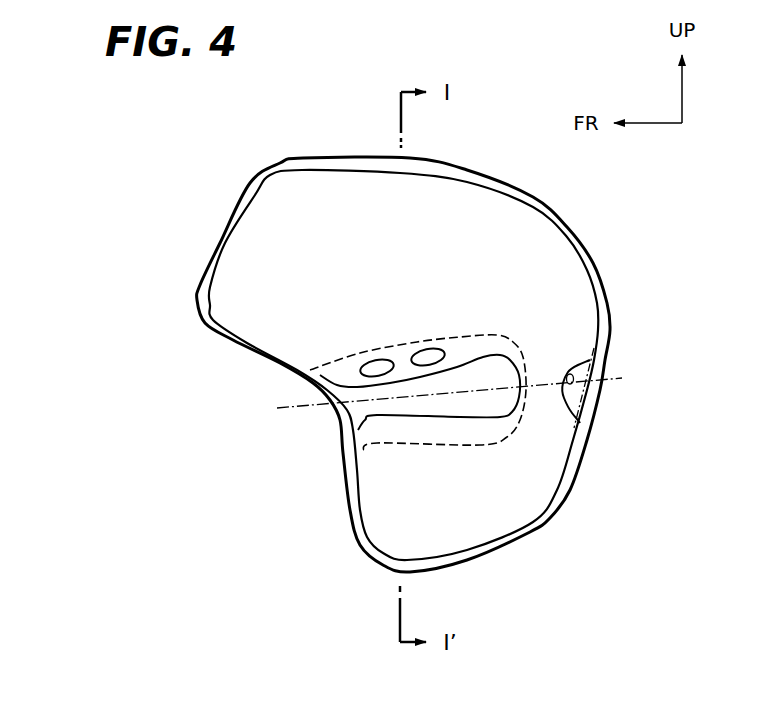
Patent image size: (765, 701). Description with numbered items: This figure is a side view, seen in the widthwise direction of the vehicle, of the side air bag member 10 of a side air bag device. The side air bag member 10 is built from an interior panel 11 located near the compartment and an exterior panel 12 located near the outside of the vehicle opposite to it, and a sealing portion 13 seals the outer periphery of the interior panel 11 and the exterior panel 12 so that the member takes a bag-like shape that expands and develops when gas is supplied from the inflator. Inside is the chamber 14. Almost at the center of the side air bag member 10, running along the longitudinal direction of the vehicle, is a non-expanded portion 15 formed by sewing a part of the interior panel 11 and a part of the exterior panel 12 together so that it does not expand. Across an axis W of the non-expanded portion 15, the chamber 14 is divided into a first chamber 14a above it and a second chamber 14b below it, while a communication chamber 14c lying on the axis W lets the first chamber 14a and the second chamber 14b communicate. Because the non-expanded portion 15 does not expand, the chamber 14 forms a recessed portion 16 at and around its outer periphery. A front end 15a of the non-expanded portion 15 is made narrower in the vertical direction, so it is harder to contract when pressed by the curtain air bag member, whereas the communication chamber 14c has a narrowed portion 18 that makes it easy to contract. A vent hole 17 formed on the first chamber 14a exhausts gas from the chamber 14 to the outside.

The side air bag member 10 is at (383, 311).
The interior panel 11 is at (265, 213).
The exterior panel 12 is at (300, 196).
The sealing portion 13 is at (220, 243).
The chamber 14 is at (722, 312).
The first chamber 14a is at (577, 323).
The second chamber 14b is at (537, 453).
The communication chamber 14c is at (547, 390).
The non-expanded portion 15 is at (463, 380).
The front end 15a is at (357, 410).
The recessed portion 16 is at (480, 350).
The vent hole 17 is at (427, 352).
The narrowed portion 18 is at (570, 367).
The axis of the non-expanded portion W is at (290, 407).